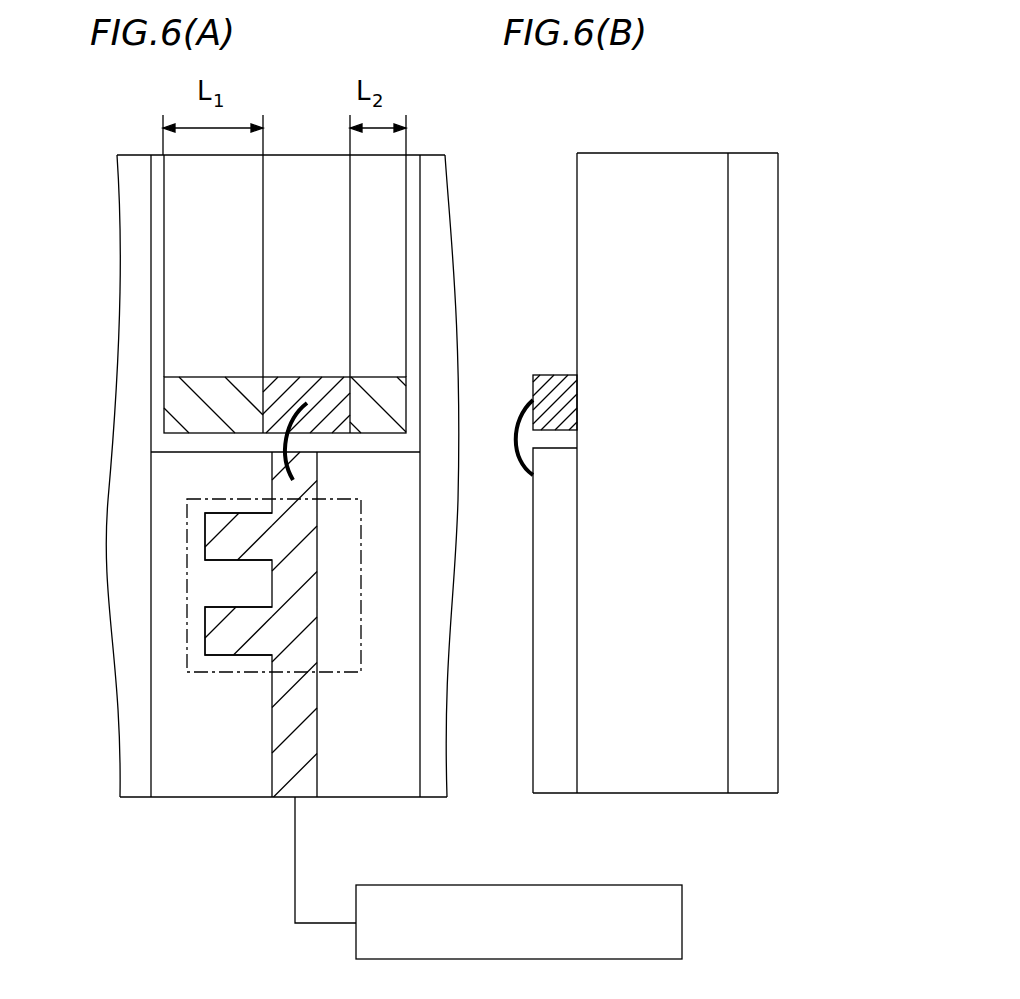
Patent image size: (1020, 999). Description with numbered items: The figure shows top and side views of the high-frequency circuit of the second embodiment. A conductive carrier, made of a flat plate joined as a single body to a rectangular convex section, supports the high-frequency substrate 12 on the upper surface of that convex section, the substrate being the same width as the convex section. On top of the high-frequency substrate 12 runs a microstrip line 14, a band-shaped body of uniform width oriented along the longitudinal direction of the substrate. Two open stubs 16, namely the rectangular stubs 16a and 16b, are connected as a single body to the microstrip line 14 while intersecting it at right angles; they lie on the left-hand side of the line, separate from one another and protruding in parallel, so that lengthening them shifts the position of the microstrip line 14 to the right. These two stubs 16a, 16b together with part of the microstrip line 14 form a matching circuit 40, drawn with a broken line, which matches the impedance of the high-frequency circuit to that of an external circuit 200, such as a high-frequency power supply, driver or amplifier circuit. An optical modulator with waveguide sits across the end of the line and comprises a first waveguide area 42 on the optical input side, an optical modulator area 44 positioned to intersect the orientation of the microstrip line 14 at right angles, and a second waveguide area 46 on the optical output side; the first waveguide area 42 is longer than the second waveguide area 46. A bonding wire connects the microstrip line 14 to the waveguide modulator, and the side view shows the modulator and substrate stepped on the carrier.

The high-frequency substrate 12 is at (560, 783).
The microstrip line 14 is at (287, 783).
The open stubs 16 is at (138, 582).
The open stub 16a is at (213, 542).
The open stub 16b is at (213, 633).
The matching circuit 40 is at (187, 660).
The first waveguide area 42 is at (180, 398).
The optical modulator area 44 is at (300, 387).
The second waveguide area 46 is at (380, 385).
The external circuit 200 is at (670, 895).